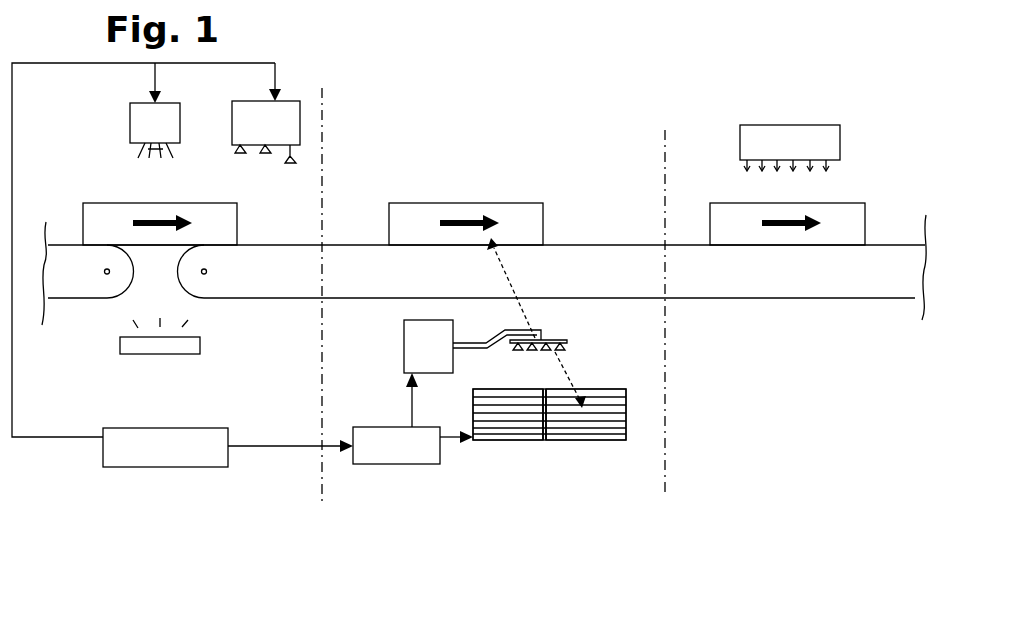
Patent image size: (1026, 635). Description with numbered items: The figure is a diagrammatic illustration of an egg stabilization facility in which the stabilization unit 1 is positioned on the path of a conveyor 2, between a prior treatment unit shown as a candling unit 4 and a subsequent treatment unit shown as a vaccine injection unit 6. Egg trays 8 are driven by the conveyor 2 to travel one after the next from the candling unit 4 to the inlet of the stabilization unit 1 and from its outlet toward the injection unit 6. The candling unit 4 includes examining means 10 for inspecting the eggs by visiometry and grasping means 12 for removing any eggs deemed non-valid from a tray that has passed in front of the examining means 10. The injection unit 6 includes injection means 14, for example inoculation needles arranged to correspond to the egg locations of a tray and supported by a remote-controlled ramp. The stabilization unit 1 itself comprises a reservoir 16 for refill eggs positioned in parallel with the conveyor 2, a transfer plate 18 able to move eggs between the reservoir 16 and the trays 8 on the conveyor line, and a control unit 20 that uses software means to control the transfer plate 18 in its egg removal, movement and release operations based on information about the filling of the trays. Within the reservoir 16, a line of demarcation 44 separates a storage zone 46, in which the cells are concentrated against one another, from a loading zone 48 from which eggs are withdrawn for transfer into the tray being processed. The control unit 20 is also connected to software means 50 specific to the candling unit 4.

The stabilization unit 1 is at (564, 153).
The conveyor 2 is at (767, 272).
The candling unit 4 is at (266, 492).
The vaccine injection unit 6 is at (778, 482).
The egg trays 8 is at (418, 208).
The examining means 10 is at (130, 114).
The grasping means 12 is at (300, 103).
The injection means 14 is at (790, 148).
The reservoir 16 is at (549, 456).
The transfer plate 18 is at (471, 335).
The control unit 20 is at (413, 418).
The line of demarcation 44 is at (545, 415).
The storage zone 46 is at (482, 415).
The loading zone 48 is at (616, 420).
The software means of the candling unit 50 is at (182, 265).